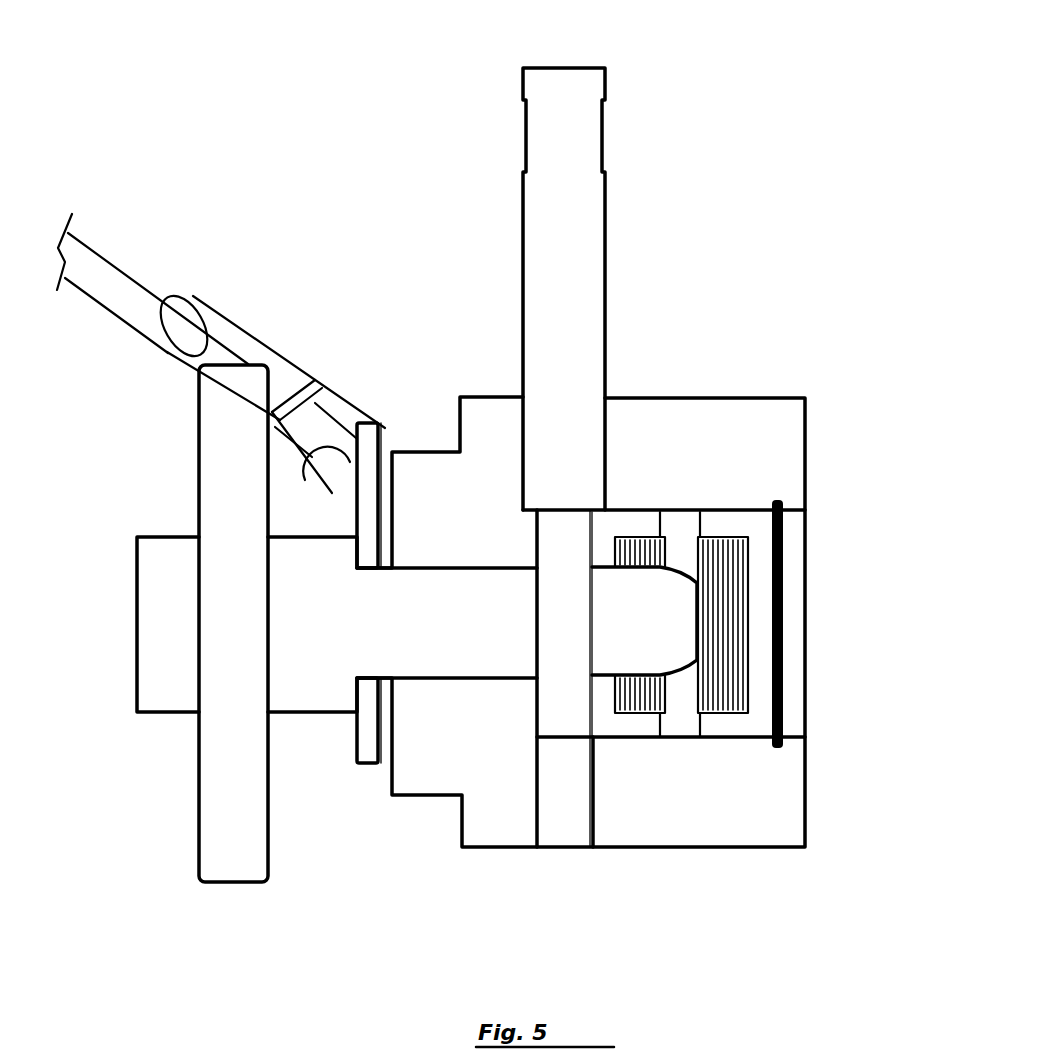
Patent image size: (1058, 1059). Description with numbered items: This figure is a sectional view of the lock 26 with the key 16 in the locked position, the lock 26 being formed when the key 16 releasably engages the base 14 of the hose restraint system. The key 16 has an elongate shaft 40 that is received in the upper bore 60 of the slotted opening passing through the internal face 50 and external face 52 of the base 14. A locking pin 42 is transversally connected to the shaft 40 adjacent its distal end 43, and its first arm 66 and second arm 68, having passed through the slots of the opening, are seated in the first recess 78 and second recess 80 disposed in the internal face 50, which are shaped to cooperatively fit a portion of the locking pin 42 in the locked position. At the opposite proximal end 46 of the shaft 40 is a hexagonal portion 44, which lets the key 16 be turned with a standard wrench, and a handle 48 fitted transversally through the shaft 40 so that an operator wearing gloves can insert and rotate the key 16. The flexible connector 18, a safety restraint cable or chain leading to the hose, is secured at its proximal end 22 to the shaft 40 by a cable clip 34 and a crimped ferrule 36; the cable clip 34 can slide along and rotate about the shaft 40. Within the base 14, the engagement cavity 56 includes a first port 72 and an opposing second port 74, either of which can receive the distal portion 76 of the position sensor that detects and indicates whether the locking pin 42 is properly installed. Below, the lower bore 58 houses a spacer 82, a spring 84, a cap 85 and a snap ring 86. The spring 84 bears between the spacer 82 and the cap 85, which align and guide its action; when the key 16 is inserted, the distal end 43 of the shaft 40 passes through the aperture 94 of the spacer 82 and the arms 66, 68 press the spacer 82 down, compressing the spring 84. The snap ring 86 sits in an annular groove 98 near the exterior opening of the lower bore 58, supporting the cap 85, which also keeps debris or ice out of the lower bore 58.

The base 14 is at (735, 327).
The key 16 is at (185, 425).
The flexible connector 18 is at (130, 328).
The proximal end 22 is at (382, 423).
The lock 26 is at (752, 120).
The cable clip 34 is at (372, 423).
The crimped ferrule 36 is at (281, 352).
The shaft 40 is at (487, 570).
The locking pin 42 is at (545, 690).
The distal end 43 is at (688, 682).
The hexagonal portion 44 is at (165, 537).
The proximal end 46 is at (318, 545).
The handle 48 is at (205, 830).
The internal face 50 is at (693, 623).
The external face 52 is at (393, 767).
The engagement cavity 56 is at (582, 738).
The lower bore 58 is at (793, 742).
The upper bore 60 is at (513, 567).
The first arm 66 is at (573, 523).
The second arm 68 is at (558, 712).
The first port 72 is at (605, 427).
The second port 74 is at (567, 828).
The distal portion 76 is at (580, 477).
The first recess 78 is at (593, 533).
The second recess 80 is at (593, 703).
The spacer 82 is at (645, 520).
The spring 84 is at (708, 538).
The cap 85 is at (740, 727).
The snap ring 86 is at (780, 547).
The aperture 94 is at (605, 685).
The annular groove 98 is at (780, 500).